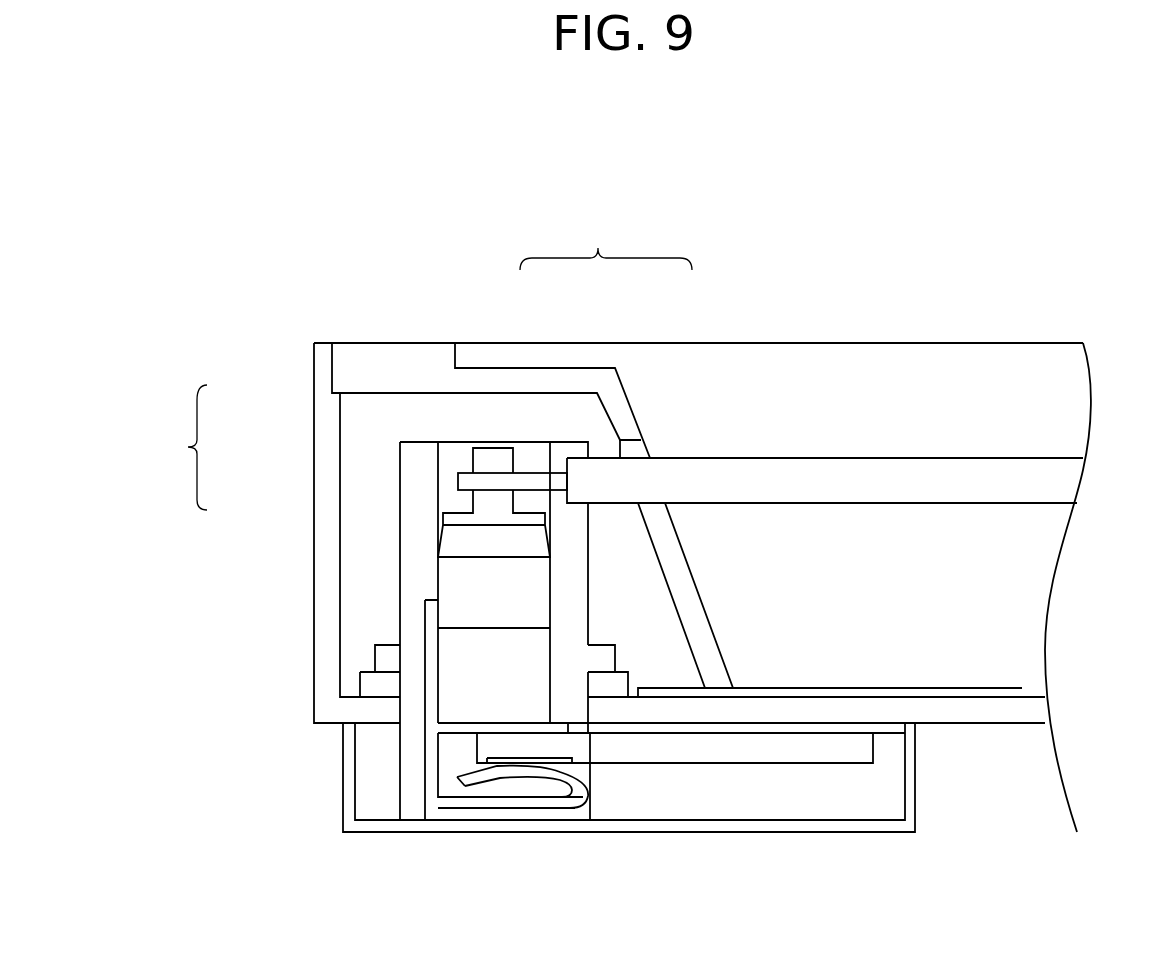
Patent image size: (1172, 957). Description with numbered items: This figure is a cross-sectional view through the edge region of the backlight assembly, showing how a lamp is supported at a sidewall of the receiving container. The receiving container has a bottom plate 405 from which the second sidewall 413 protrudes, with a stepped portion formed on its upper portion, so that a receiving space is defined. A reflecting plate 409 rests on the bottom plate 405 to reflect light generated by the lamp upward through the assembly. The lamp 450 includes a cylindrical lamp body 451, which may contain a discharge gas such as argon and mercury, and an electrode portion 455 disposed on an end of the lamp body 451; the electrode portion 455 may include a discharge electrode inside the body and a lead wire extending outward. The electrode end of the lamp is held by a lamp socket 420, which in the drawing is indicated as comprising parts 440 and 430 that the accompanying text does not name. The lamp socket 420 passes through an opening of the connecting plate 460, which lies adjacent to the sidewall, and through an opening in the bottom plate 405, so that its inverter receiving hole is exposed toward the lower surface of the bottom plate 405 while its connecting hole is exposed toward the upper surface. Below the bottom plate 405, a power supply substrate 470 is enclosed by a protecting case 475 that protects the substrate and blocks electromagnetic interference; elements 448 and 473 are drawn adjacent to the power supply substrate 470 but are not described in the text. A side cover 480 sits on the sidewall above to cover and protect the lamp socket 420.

The bottom plate 405 is at (1027, 710).
The reflecting plate 409 is at (1023, 690).
The second sidewall 413 is at (325, 578).
The lamp socket 420 is at (175, 447).
The bracket 430 is at (410, 485).
The actuator body 440 is at (495, 458).
The leaf spring 448 is at (538, 772).
The lamp 450 is at (606, 243).
The lamp body 451 is at (688, 472).
The electrode portion 455 is at (533, 482).
The connecting plate 460 is at (372, 687).
The power supply substrate 470 is at (724, 737).
The contact strip 473 is at (570, 763).
The protecting case 475 is at (913, 815).
The side cover 480 is at (477, 385).